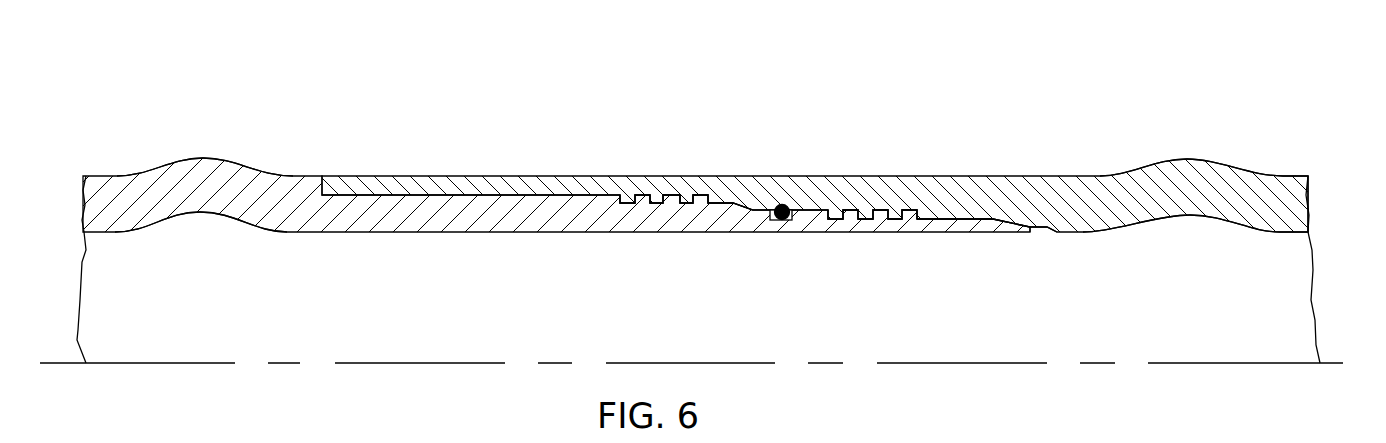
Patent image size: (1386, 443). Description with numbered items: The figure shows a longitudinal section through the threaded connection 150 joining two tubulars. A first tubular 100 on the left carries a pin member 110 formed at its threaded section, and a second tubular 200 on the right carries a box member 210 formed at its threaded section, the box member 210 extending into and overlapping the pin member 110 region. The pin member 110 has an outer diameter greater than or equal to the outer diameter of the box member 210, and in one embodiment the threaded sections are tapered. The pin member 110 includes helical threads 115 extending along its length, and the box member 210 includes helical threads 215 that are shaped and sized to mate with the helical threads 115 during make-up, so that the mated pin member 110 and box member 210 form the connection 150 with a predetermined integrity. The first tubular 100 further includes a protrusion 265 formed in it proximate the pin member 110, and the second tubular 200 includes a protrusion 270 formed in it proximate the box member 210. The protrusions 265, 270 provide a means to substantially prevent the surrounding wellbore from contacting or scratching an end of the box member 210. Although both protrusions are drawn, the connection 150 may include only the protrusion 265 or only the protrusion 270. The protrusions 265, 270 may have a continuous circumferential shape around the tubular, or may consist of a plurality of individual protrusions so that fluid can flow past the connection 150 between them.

The first tubular 100 is at (102, 188).
The pin member 110 is at (1002, 222).
The helical threads 115 is at (886, 216).
The threaded connection 150 is at (573, 118).
The second tubular 200 is at (1289, 186).
The box member 210 is at (818, 188).
The helical threads 215 is at (886, 212).
The protrusion 265 is at (203, 157).
The protrusion 270 is at (1188, 158).